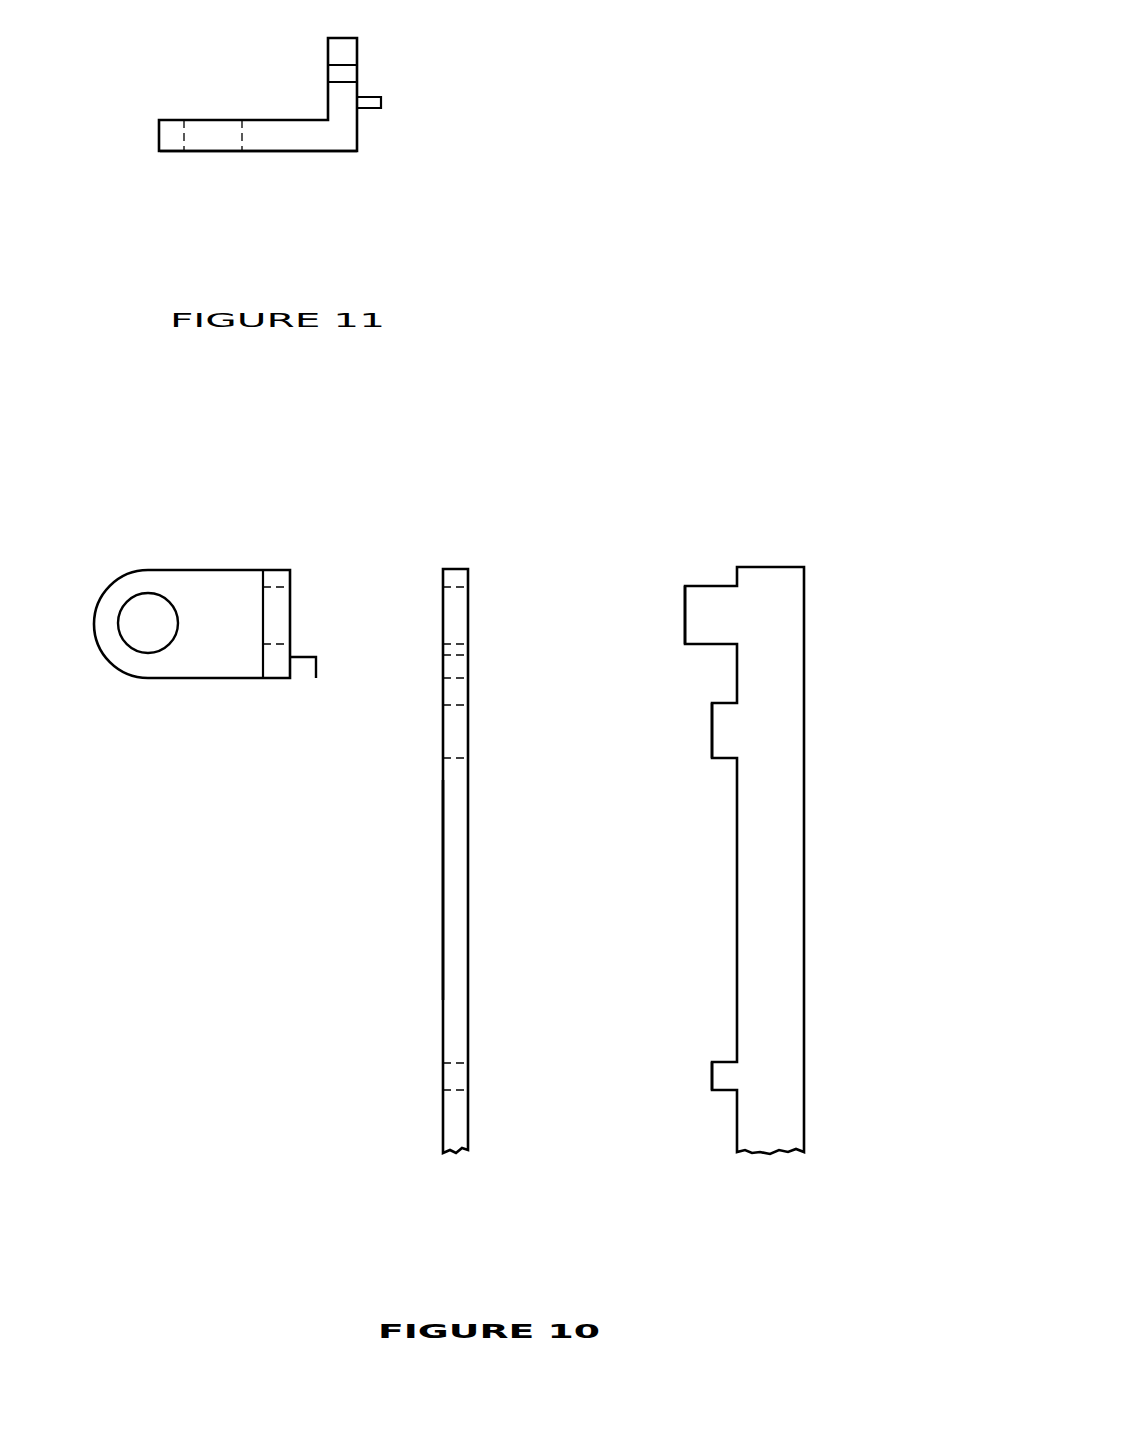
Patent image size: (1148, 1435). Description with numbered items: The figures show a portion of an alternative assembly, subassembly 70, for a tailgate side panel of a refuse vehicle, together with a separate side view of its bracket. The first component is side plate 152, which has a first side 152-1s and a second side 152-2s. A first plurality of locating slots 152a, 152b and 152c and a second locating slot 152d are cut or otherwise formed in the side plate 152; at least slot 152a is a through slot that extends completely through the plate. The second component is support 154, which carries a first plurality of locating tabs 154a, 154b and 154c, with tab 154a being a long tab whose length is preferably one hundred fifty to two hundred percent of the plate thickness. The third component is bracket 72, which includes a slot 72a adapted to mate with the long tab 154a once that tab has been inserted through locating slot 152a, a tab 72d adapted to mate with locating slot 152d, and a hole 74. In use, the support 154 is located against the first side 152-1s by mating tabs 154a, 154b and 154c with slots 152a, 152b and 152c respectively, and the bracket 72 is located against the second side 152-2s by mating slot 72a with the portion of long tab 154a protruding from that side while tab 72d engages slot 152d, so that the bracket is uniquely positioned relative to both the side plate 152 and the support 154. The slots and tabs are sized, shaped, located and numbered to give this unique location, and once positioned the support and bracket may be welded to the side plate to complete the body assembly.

In FIG. 10, the subassembly 70 is at (814, 456).
In FIG. 11, the bracket 72 is at (267, 135).
In FIG. 10, the bracket 72 is at (198, 565).
In FIG. 11, the slot 72a is at (361, 69).
In FIG. 10, the slot 72a is at (293, 603).
In FIG. 11, the tab 72d is at (379, 101).
In FIG. 10, the tab 72d is at (307, 668).
In FIG. 11, the hole 74 is at (212, 154).
In FIG. 10, the hole 74 is at (146, 658).
In FIG. 10, the side plate 152 is at (455, 1014).
In FIG. 10, the locating slot 152a is at (470, 598).
In FIG. 10, the locating slot 152b is at (470, 722).
In FIG. 10, the locating slot 152c is at (470, 1070).
In FIG. 10, the second locating slot 152d is at (440, 668).
In FIG. 10, the first side 152-1s is at (470, 818).
In FIG. 10, the second side 152-2s is at (441, 913).
In FIG. 10, the support 154 is at (807, 800).
In FIG. 10, the long tab 154a is at (683, 610).
In FIG. 10, the locating tab 154b is at (710, 733).
In FIG. 10, the locating tab 154c is at (709, 1073).